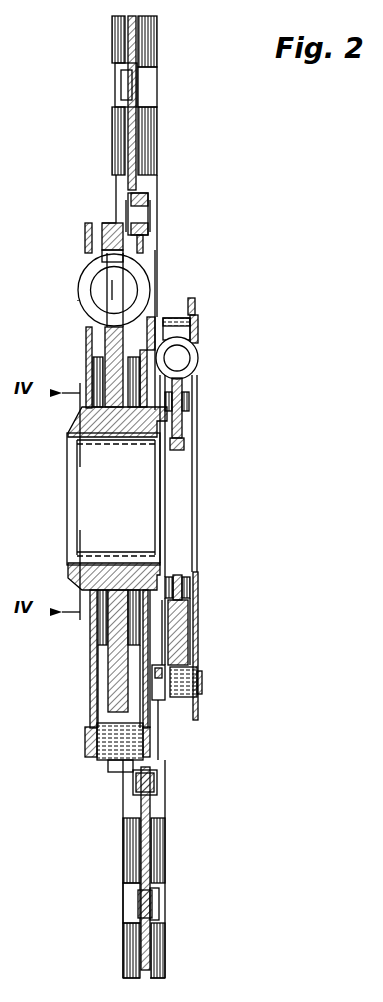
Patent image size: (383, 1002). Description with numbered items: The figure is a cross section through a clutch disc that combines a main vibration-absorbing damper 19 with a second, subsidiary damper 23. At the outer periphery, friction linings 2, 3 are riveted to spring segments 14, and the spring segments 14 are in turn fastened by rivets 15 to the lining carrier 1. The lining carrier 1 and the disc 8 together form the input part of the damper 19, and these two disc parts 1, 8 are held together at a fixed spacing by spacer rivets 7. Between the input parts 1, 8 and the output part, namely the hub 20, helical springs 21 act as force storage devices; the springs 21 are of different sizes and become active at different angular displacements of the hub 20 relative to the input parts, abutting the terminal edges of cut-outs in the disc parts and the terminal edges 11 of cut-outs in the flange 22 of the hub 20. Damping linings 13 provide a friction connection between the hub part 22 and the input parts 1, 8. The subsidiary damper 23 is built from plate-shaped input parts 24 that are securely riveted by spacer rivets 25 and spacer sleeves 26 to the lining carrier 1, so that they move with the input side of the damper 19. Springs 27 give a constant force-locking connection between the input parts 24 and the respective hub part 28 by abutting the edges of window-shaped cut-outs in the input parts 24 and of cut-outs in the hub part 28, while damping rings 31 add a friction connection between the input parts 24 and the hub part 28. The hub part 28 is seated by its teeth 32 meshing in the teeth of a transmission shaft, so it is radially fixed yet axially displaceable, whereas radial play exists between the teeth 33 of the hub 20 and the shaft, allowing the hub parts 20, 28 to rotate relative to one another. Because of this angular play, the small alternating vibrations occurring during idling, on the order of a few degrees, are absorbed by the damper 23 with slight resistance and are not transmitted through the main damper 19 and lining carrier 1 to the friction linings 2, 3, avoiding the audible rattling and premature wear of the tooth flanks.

The lining carrier 1 is at (140, 663).
The friction lining 2 is at (123, 33).
The friction lining 3 is at (147, 30).
The spacer rivets 7 is at (108, 743).
The disc 8 is at (85, 233).
The terminal edges 11 is at (112, 287).
The damping linings 13 is at (137, 600).
The spring segments 14 is at (130, 127).
The rivets 15 is at (135, 218).
The vibration-absorbing damper 19 is at (38, 298).
The hub 20 is at (83, 422).
The helical springs 21 is at (140, 275).
The flange 22 is at (117, 372).
The subsidiary damper 23 is at (236, 297).
The input parts 24 is at (197, 640).
The spacer rivets 25 is at (167, 707).
The spacer sleeves 26 is at (198, 695).
The springs 27 is at (191, 355).
The hub part 28 is at (181, 427).
The damping rings 31 is at (190, 590).
The teeth 32 is at (181, 440).
The teeth 33 is at (117, 440).